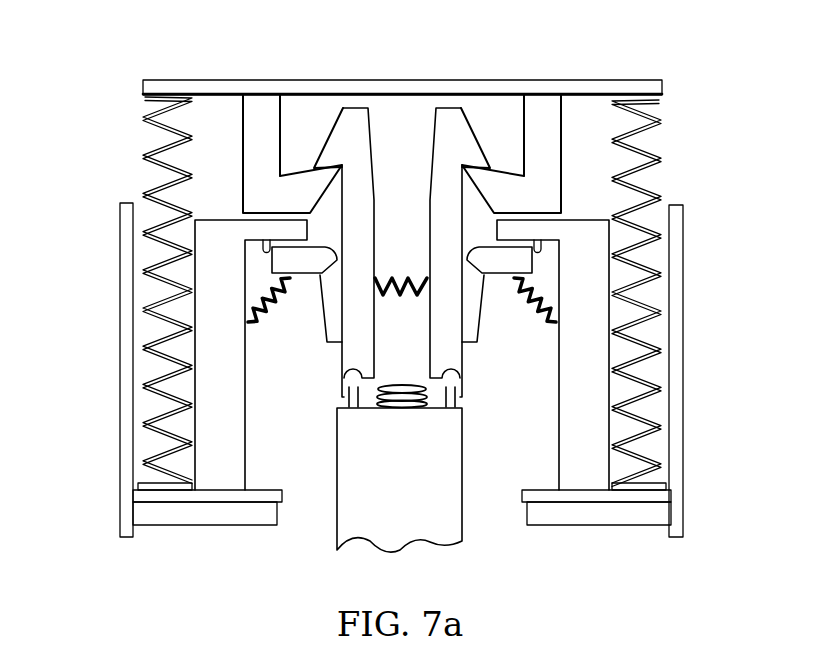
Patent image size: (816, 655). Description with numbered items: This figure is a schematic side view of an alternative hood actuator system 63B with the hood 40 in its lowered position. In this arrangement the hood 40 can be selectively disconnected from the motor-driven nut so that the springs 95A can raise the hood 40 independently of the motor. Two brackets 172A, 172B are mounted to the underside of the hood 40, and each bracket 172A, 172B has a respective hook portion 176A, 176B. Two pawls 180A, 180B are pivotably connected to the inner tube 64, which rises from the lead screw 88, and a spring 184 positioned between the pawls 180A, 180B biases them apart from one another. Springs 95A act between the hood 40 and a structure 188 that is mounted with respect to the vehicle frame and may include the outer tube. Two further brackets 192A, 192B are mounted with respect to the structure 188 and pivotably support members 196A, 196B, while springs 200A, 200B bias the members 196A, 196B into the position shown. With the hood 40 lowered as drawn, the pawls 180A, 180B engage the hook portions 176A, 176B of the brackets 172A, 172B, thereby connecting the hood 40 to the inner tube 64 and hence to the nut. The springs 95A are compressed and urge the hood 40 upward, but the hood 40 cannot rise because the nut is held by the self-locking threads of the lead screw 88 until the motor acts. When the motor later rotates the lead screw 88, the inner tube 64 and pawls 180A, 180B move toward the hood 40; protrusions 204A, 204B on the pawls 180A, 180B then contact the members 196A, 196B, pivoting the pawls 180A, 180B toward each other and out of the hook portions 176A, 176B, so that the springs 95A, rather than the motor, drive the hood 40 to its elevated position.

The hood actuator system 63B is at (90, 106).
The hood 40 is at (333, 80).
The bracket 172A is at (260, 140).
The bracket 172B is at (543, 140).
The hook portion 176A is at (298, 192).
The hook portion 176B is at (505, 192).
The pawl 180A is at (363, 190).
The pawl 180B is at (437, 190).
The spring 184 is at (407, 272).
The lead screw 88 is at (403, 383).
The inner tube 64 is at (463, 537).
The springs 95A is at (143, 153).
The member 196A is at (278, 264).
The member 196B is at (520, 260).
The spring 200A is at (246, 300).
The spring 200B is at (553, 300).
The protrusion 204A is at (323, 318).
The protrusion 204B is at (481, 318).
The bracket 192A is at (207, 450).
The bracket 192B is at (593, 452).
The structure 188 is at (680, 367).